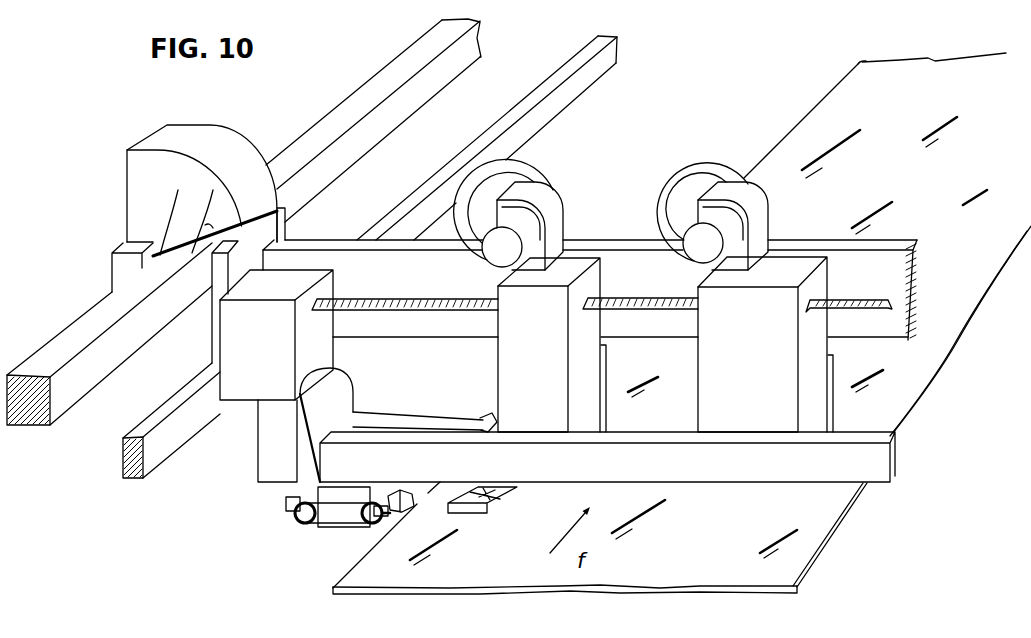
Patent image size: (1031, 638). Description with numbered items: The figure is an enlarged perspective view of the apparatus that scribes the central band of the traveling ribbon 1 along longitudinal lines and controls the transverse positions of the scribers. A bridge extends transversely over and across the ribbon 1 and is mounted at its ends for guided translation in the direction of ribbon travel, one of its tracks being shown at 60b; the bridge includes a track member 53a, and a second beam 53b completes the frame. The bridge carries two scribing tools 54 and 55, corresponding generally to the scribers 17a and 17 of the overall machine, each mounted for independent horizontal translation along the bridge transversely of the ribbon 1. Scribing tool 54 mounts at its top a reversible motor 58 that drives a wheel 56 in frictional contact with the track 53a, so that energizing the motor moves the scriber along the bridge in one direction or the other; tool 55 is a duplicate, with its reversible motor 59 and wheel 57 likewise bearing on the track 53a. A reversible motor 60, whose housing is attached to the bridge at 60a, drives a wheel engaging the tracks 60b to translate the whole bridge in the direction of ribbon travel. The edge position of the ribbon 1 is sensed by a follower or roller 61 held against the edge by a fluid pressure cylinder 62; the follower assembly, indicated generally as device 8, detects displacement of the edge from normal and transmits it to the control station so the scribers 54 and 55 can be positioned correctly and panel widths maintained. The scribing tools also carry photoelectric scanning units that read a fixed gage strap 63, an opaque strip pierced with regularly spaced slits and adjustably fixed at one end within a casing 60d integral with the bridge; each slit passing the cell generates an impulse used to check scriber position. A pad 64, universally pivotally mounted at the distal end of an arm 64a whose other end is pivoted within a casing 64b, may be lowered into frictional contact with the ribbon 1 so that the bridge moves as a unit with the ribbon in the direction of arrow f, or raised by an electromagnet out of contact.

The ribbon 1 is at (818, 527).
The device 8 is at (293, 536).
The scriber 17 is at (851, 410).
The scriber 17a is at (622, 369).
The track member 53a is at (625, 258).
The lower frame beam 53b is at (707, 478).
The scribing tool 54 is at (502, 362).
The scribing tool 55 is at (703, 382).
The wheel 56 is at (515, 178).
The wheel 57 is at (690, 170).
The reversible motor 58 is at (557, 212).
The reversible motor 59 is at (740, 228).
The reversible motor 60 is at (247, 152).
The motor housing attachment 60a is at (286, 230).
The track 60b is at (367, 143).
The casing 60d is at (245, 392).
The follower 61 is at (417, 500).
The fluid pressure cylinder 62 is at (333, 513).
The gage strap 63 is at (413, 310).
The pad 64 is at (482, 503).
The arm 64a is at (382, 418).
The casing 64b is at (272, 477).